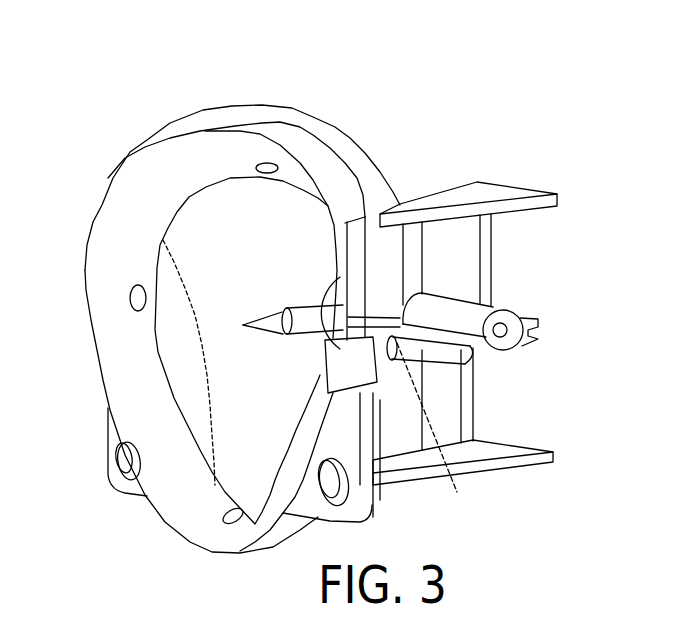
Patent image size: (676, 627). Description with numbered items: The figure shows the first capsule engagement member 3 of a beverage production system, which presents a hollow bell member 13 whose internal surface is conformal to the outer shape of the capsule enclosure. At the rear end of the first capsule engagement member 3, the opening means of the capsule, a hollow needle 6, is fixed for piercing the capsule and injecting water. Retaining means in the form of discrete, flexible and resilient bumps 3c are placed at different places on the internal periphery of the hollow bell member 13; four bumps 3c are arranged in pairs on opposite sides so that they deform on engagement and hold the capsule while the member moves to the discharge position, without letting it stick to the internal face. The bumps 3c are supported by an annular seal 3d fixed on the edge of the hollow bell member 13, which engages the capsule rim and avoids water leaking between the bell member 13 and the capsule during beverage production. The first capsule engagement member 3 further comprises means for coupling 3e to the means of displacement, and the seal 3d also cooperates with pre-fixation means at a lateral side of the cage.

The first capsule engagement member 3 is at (229, 75).
The hollow bell member 13 is at (223, 203).
The bumps 3c is at (268, 162).
The annular seal 3d is at (137, 192).
The means for coupling 3e is at (515, 337).
The hollow needle 6 is at (273, 302).